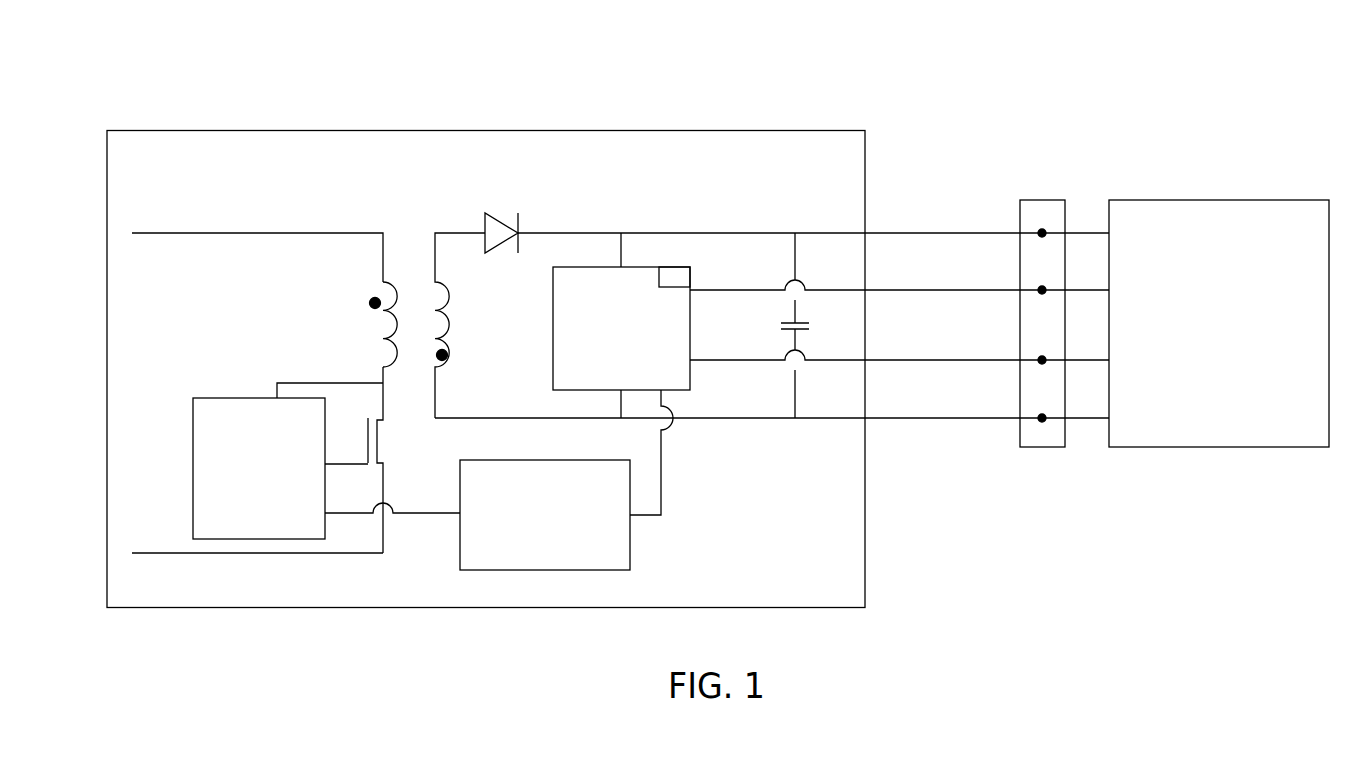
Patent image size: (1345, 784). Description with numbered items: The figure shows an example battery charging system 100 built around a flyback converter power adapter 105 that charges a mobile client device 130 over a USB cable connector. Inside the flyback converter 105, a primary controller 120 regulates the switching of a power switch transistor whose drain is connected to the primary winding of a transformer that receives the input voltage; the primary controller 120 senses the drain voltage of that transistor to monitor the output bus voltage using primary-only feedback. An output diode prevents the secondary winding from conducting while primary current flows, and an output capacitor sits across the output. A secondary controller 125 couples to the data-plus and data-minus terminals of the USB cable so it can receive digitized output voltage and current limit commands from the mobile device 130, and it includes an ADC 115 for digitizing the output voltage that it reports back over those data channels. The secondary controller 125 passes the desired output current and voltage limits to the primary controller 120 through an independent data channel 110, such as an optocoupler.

The charging system 100 is at (787, 31).
The flyback converter power adapter 105 is at (637, 130).
The independent data channel 110 is at (568, 558).
The ADC 115 is at (676, 268).
The primary controller 120 is at (283, 512).
The secondary controller 125 is at (645, 371).
The mobile (client) device 130 is at (1243, 352).